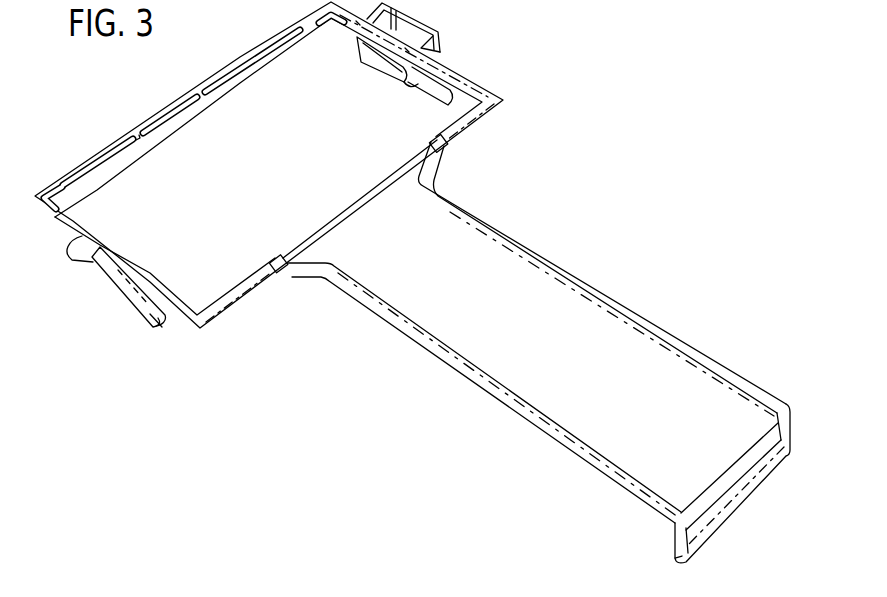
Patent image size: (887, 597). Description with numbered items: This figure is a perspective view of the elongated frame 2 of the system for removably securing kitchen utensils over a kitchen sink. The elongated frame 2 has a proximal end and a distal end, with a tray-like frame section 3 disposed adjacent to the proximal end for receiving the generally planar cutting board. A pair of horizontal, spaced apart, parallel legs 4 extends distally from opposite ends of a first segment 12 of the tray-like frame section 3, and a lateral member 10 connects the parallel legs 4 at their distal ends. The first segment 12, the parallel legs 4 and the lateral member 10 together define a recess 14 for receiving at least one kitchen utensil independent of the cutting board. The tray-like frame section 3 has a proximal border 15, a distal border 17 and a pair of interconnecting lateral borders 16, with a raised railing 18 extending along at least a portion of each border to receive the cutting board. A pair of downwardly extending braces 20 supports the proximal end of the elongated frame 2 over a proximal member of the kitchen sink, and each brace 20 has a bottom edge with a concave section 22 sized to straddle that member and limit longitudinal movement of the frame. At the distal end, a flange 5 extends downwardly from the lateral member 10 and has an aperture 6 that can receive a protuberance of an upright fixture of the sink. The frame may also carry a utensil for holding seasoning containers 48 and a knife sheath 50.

The elongated frame 2 is at (478, 193).
The tray-like frame section 3 is at (268, 188).
The parallel legs 4 is at (536, 238).
The flange 5 is at (672, 566).
The aperture 6 is at (751, 462).
The lateral member 10 is at (732, 457).
The first segment 12 is at (375, 207).
The recess 14 is at (625, 367).
The proximal border 15 is at (218, 74).
The lateral borders 16 is at (365, 45).
The distal border 17 is at (248, 306).
The raised railing 18 is at (185, 95).
The downwardly extending braces 20 is at (390, 84).
The concave section 22 is at (427, 97).
The utensil for holding seasoning containers 48 is at (440, 26).
The knife sheath 50 is at (133, 307).